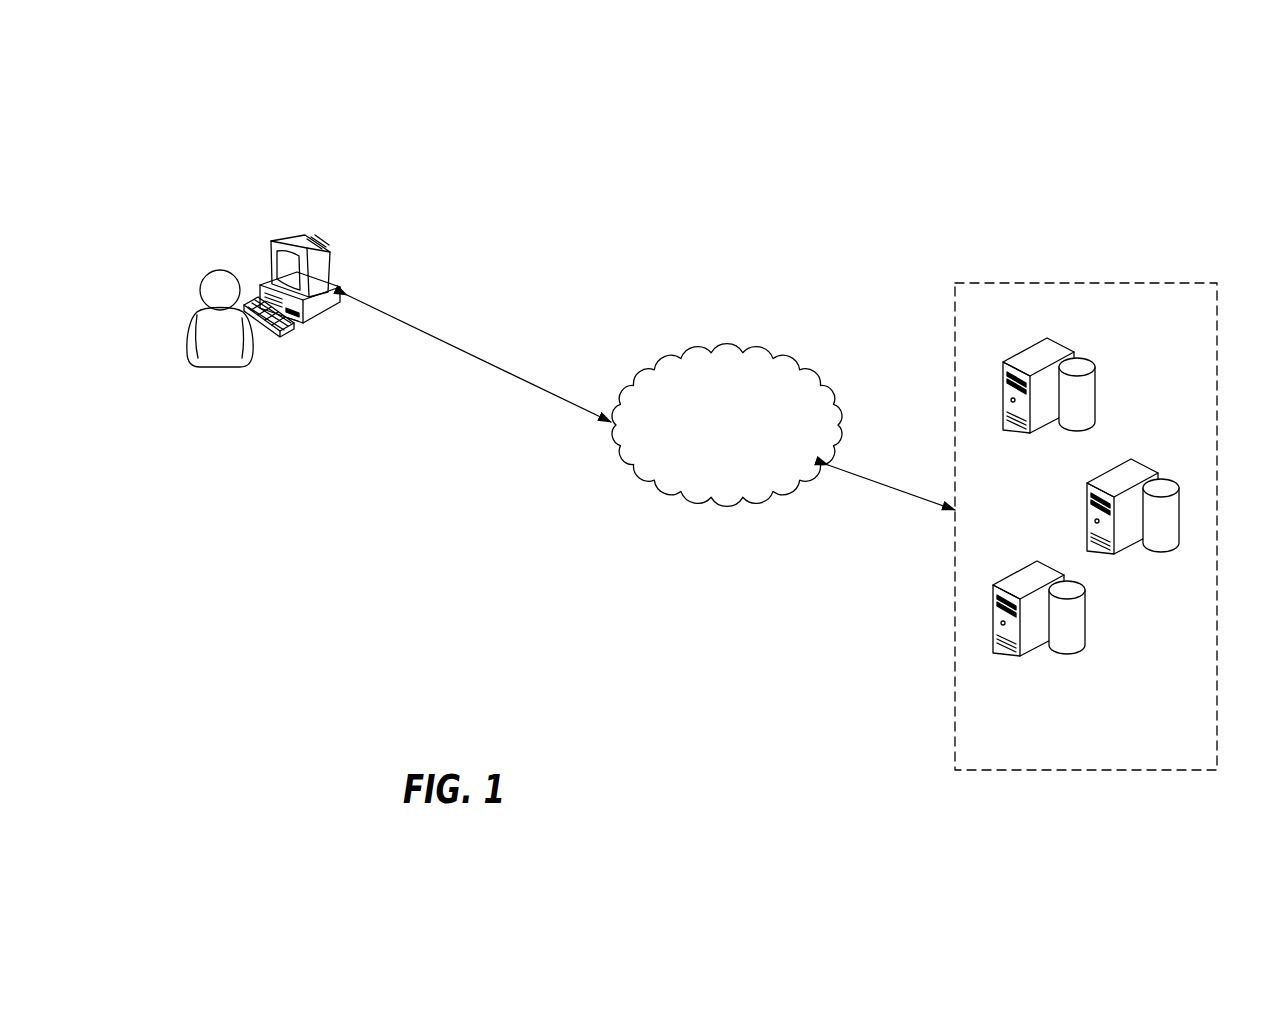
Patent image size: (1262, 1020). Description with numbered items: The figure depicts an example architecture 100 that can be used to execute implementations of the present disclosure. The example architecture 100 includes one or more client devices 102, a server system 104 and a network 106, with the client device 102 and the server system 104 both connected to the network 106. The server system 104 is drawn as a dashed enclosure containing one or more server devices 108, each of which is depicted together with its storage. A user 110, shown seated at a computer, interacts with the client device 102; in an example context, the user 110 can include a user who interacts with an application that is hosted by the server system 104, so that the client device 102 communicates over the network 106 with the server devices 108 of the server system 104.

The example architecture 100 is at (578, 112).
The client device 102 is at (271, 244).
The server system 104 is at (1086, 283).
The network 106 is at (728, 351).
The server device 108 is at (1095, 372).
The user 110 is at (220, 368).